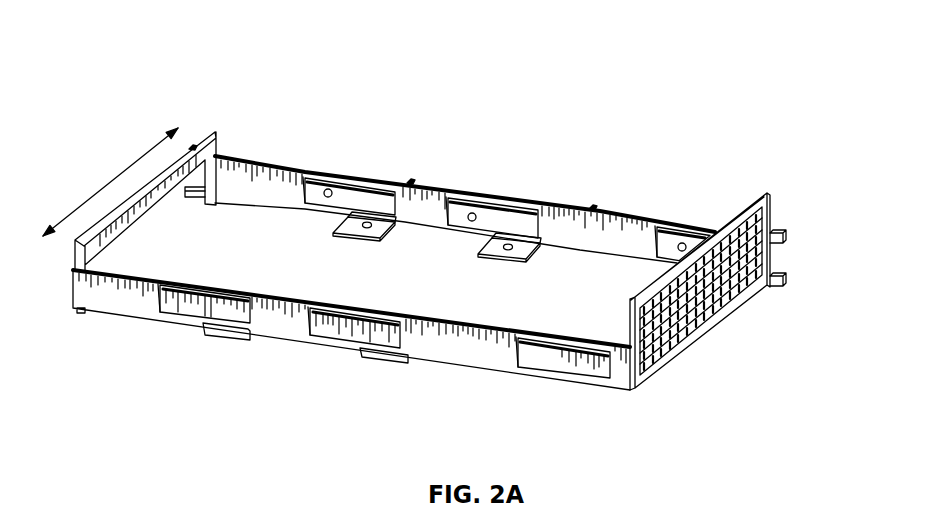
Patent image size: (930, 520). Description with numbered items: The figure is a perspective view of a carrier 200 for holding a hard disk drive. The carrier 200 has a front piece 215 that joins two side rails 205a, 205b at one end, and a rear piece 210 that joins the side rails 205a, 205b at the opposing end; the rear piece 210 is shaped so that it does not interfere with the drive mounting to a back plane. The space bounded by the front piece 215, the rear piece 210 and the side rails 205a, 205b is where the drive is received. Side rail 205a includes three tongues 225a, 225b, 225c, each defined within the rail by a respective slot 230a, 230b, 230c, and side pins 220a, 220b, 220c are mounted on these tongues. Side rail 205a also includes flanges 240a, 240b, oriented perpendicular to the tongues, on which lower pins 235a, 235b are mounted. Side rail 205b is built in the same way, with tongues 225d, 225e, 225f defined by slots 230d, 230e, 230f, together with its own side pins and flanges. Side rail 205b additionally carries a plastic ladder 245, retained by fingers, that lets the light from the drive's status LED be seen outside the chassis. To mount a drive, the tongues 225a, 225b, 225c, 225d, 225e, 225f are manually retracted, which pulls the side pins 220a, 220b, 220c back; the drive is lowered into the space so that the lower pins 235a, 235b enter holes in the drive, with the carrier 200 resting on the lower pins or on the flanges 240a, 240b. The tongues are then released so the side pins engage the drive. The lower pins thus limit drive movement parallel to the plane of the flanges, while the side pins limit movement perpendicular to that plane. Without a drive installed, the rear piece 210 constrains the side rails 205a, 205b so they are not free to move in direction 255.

The carrier 200 is at (160, 36).
The side rail 205a is at (230, 189).
The side rail 205b is at (93, 292).
The rear piece 210 is at (193, 147).
The front piece 215 is at (738, 303).
The pin 220a is at (333, 188).
The pin 220b is at (477, 210).
The pin 220c is at (685, 240).
The tongue 225a is at (350, 203).
The tongue 225b is at (490, 222).
The tongue 225c is at (670, 254).
The tongue 225d is at (223, 308).
The tongue 225e is at (368, 330).
The tongue 225f is at (583, 358).
The slot 230a is at (300, 177).
The slot 230b is at (443, 208).
The slot 230c is at (657, 240).
The slot 230d is at (158, 298).
The slot 230e is at (310, 327).
The slot 230f is at (518, 357).
The pin 235a is at (348, 229).
The pin 235b is at (490, 257).
The flange 240a is at (357, 242).
The flange 240b is at (503, 270).
The plastic ladder 245 is at (182, 192).
The direction 255 is at (127, 168).